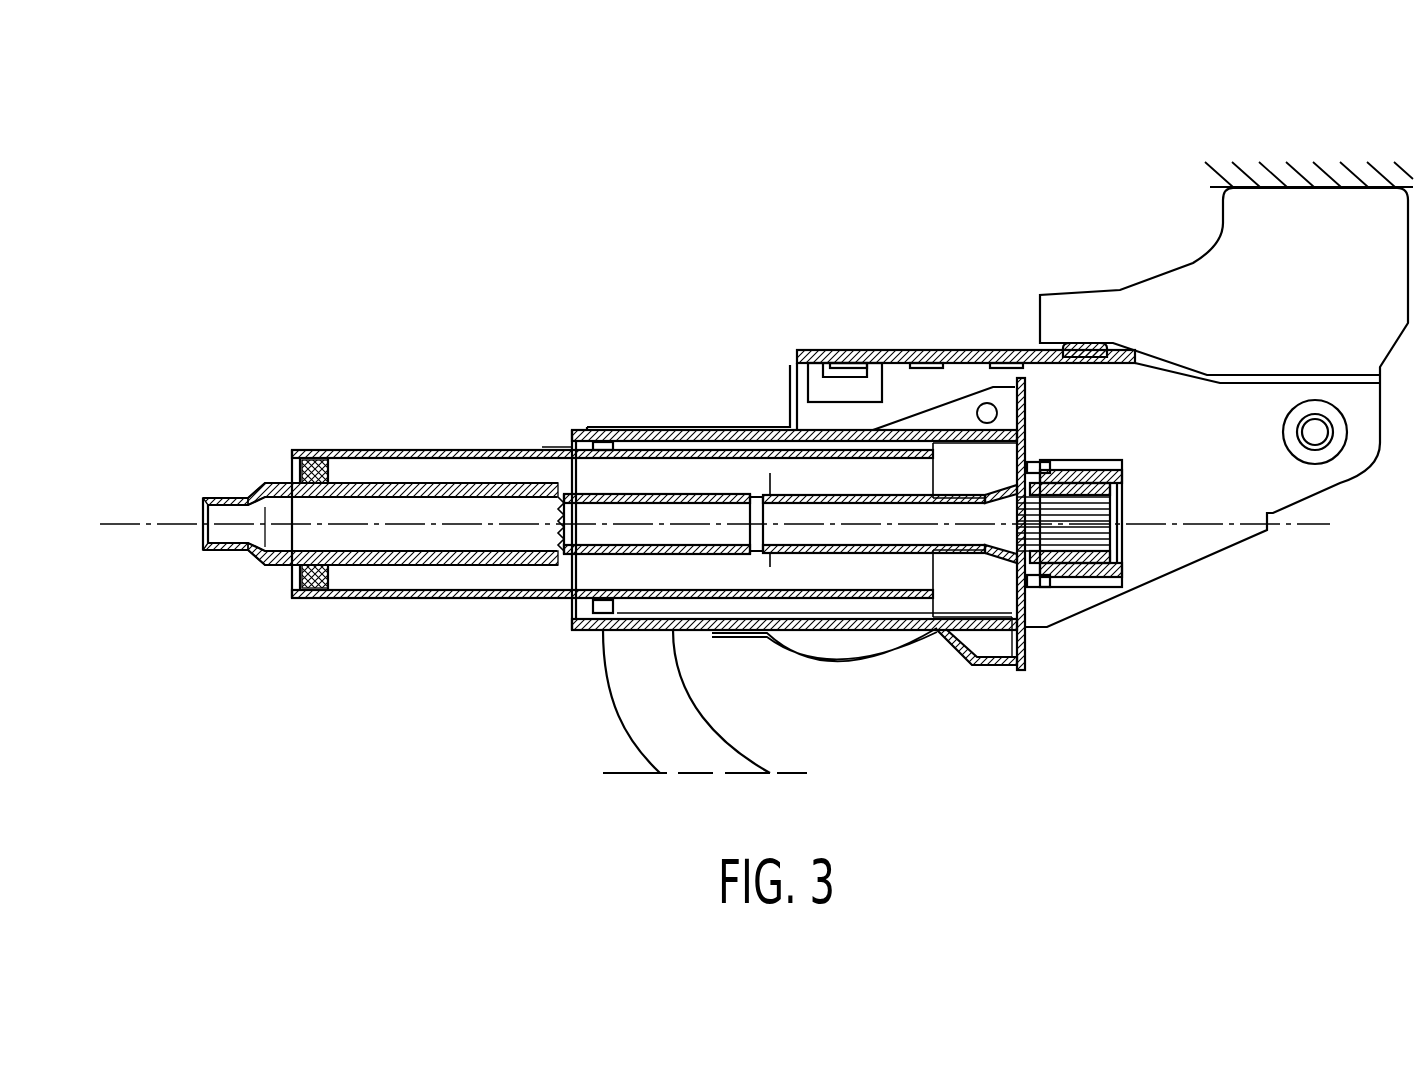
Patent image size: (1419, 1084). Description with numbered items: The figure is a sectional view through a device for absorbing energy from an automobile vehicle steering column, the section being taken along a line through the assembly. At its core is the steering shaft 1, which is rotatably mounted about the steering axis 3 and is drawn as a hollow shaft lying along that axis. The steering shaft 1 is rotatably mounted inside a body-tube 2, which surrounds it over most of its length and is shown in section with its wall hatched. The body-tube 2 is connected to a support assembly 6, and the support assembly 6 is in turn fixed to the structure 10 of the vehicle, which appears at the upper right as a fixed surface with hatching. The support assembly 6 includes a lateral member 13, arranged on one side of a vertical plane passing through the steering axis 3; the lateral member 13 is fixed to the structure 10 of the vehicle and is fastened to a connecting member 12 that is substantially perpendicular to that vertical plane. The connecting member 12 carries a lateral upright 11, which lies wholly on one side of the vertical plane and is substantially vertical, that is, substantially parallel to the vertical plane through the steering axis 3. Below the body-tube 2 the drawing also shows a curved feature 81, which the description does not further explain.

The steering shaft 1 is at (420, 566).
The body-tube 2 is at (458, 449).
The steering axis 3 is at (130, 523).
The support assembly 6 is at (915, 350).
The structure of the vehicle 10 is at (1250, 170).
The lateral upright 11 is at (800, 410).
The connecting member 12 is at (846, 360).
The lateral member 13 is at (1227, 280).
The guide curve 81 is at (647, 717).